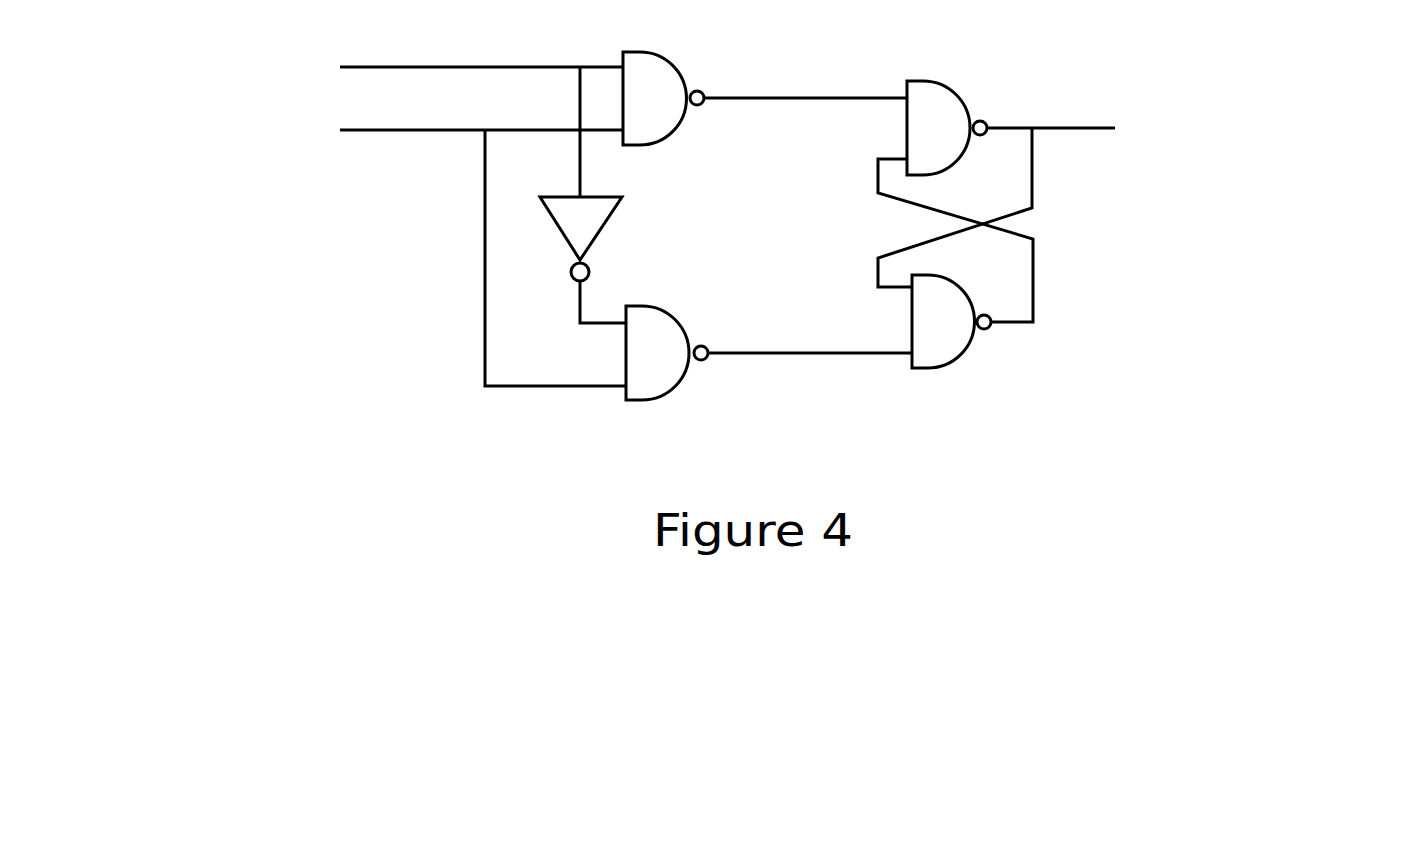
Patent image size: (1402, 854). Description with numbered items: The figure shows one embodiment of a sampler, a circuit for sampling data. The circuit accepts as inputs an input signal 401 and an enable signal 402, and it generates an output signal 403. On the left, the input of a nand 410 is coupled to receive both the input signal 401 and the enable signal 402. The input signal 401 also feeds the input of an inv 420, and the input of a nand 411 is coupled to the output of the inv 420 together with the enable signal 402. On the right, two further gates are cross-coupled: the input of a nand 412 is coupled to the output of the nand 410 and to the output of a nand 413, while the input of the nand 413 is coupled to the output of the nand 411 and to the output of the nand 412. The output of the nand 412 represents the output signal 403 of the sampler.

The input signal 401 is at (354, 123).
The enable signal 402 is at (344, 247).
The output signal 403 is at (1193, 126).
The nand 410 is at (765, 77).
The nand 411 is at (769, 372).
The nand 412 is at (972, 165).
The nand 413 is at (975, 287).
The inv 420 is at (642, 260).